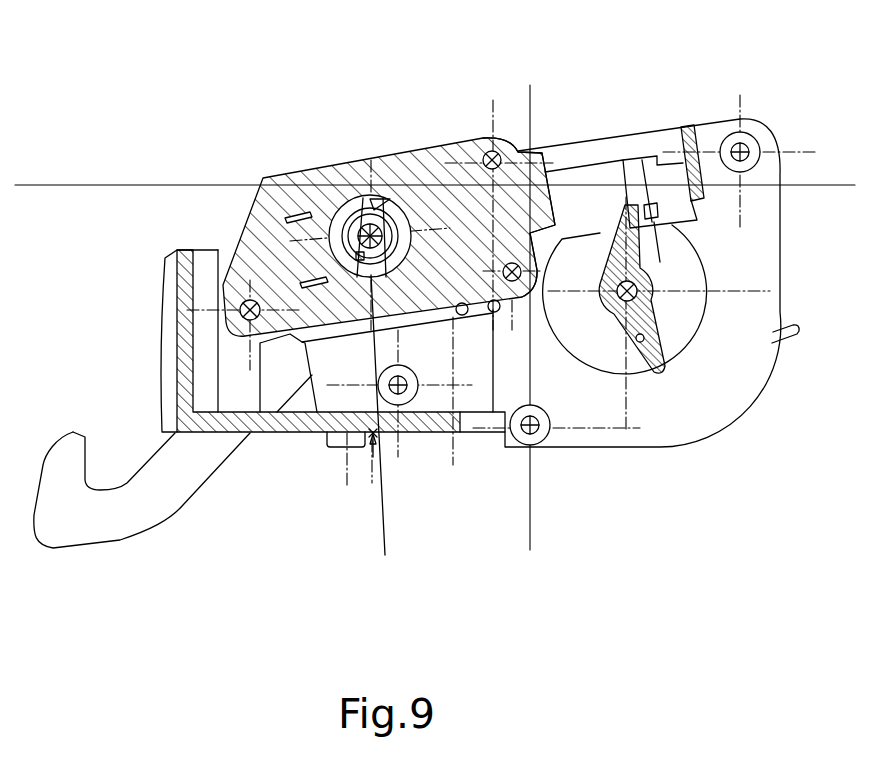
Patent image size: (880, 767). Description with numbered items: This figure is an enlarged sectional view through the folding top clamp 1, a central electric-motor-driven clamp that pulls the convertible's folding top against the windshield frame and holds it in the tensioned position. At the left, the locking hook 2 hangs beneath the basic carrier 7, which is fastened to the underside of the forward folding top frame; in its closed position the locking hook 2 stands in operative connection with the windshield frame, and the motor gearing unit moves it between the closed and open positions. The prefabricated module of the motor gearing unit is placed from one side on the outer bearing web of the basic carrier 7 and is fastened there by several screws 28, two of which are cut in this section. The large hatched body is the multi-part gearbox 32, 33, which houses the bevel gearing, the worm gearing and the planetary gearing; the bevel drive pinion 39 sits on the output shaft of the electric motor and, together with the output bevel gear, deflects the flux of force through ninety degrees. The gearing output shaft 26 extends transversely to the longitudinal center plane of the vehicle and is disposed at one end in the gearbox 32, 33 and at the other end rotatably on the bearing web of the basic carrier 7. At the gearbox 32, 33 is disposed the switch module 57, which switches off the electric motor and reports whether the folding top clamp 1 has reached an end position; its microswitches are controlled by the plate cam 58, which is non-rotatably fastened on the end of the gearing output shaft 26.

The folding top clamp 1 is at (762, 114).
The locking hook 2 is at (78, 553).
The basic carrier 7 is at (287, 430).
The gearing output shaft 26 is at (772, 342).
The screws 28 is at (754, 147).
The gearbox part 32 is at (300, 176).
The gearbox part 33 is at (428, 150).
The bevel drive pinion 39 is at (360, 259).
The switch module 57 is at (594, 160).
The plate cam 58 is at (647, 368).